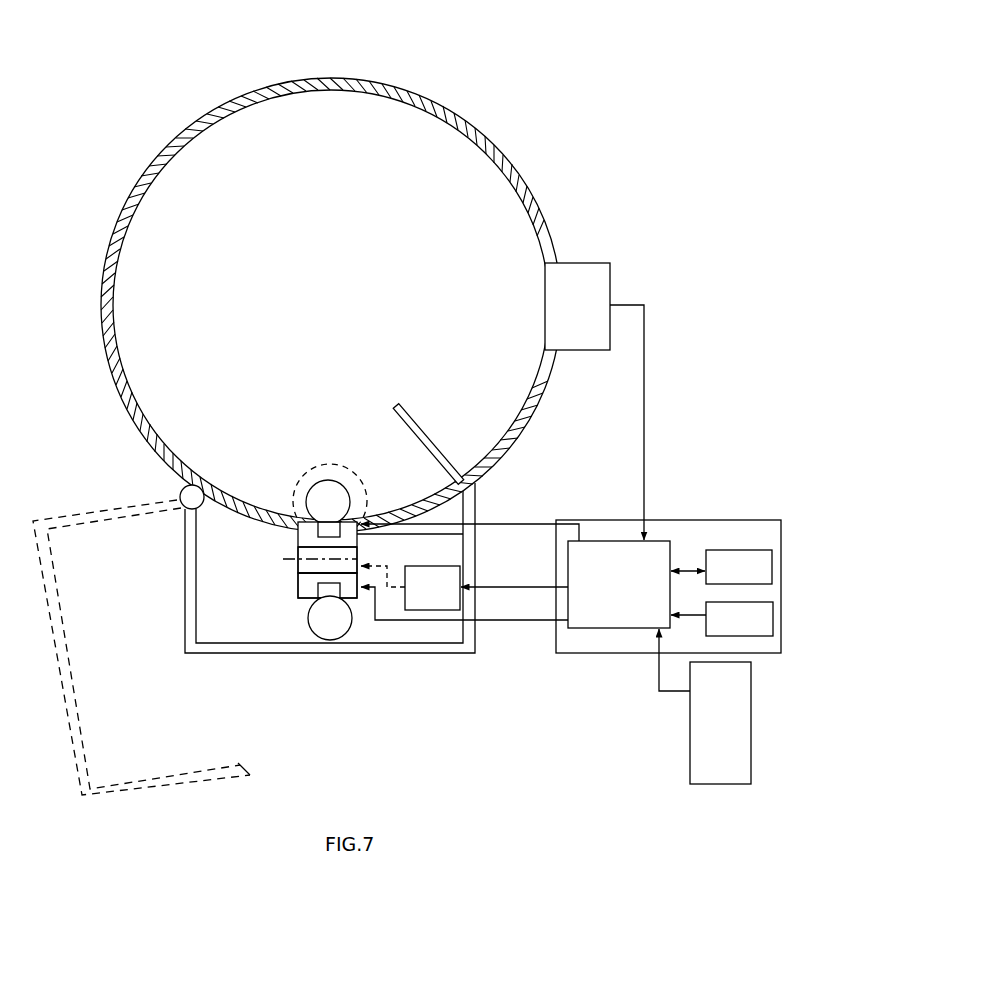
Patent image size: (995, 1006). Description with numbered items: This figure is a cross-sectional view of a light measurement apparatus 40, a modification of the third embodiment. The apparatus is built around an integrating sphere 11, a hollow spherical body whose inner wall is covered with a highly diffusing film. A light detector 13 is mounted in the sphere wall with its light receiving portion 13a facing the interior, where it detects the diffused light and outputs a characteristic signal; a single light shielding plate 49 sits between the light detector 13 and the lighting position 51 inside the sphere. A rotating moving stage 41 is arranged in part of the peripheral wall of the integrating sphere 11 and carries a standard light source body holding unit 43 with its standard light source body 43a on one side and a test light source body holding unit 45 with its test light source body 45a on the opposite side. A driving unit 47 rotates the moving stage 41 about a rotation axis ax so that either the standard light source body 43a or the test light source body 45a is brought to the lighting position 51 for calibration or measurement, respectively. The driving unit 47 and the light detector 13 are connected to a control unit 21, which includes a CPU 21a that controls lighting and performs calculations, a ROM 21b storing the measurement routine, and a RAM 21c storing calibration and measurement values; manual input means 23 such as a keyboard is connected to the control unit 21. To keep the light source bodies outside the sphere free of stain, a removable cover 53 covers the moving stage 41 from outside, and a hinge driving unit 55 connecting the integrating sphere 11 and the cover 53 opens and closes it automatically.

The light measurement apparatus 40 is at (606, 62).
The integrating sphere 11 is at (137, 431).
The light detector 13 is at (594, 401).
The light receiving portion of the light detector 13a is at (544, 305).
The light shielding plate 49 is at (428, 440).
The hinge driving unit 55 is at (182, 489).
The removable cover 53 is at (281, 654).
The lighting position 51 is at (318, 465).
The standard light source body 43a is at (307, 493).
The standard light source body holding unit 43 is at (303, 535).
The moving stage 41 is at (313, 566).
The rotation axis ax is at (362, 558).
The test light source body holding unit 45 is at (313, 584).
The test light source body 45a is at (323, 622).
The driving unit 47 is at (464, 593).
The control unit 21 is at (571, 586).
The CPU 21a is at (619, 584).
The ROM 21b is at (722, 619).
The RAM 21c is at (721, 567).
The manual input means 23 is at (705, 706).